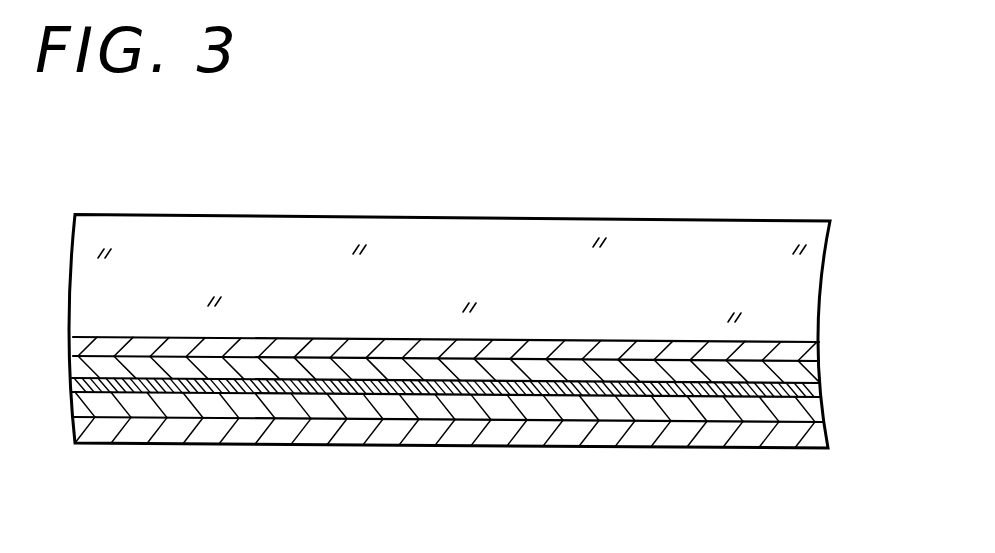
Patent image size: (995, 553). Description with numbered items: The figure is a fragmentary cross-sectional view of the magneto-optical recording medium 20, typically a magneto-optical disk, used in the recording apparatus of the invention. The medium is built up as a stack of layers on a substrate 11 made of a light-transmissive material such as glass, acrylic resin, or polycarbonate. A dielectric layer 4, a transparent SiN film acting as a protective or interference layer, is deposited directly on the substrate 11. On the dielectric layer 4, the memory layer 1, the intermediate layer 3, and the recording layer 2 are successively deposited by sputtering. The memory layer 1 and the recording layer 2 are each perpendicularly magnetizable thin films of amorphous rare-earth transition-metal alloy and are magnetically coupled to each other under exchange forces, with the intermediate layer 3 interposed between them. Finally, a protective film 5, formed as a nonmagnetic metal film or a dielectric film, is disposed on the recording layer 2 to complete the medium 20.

The magneto-optical recording medium 20 is at (364, 210).
The substrate 11 is at (810, 260).
The dielectric layer 4 is at (818, 349).
The memory layer 1 is at (820, 374).
The intermediate layer 3 is at (822, 396).
The recording layer 2 is at (513, 405).
The protective film 5 is at (713, 433).